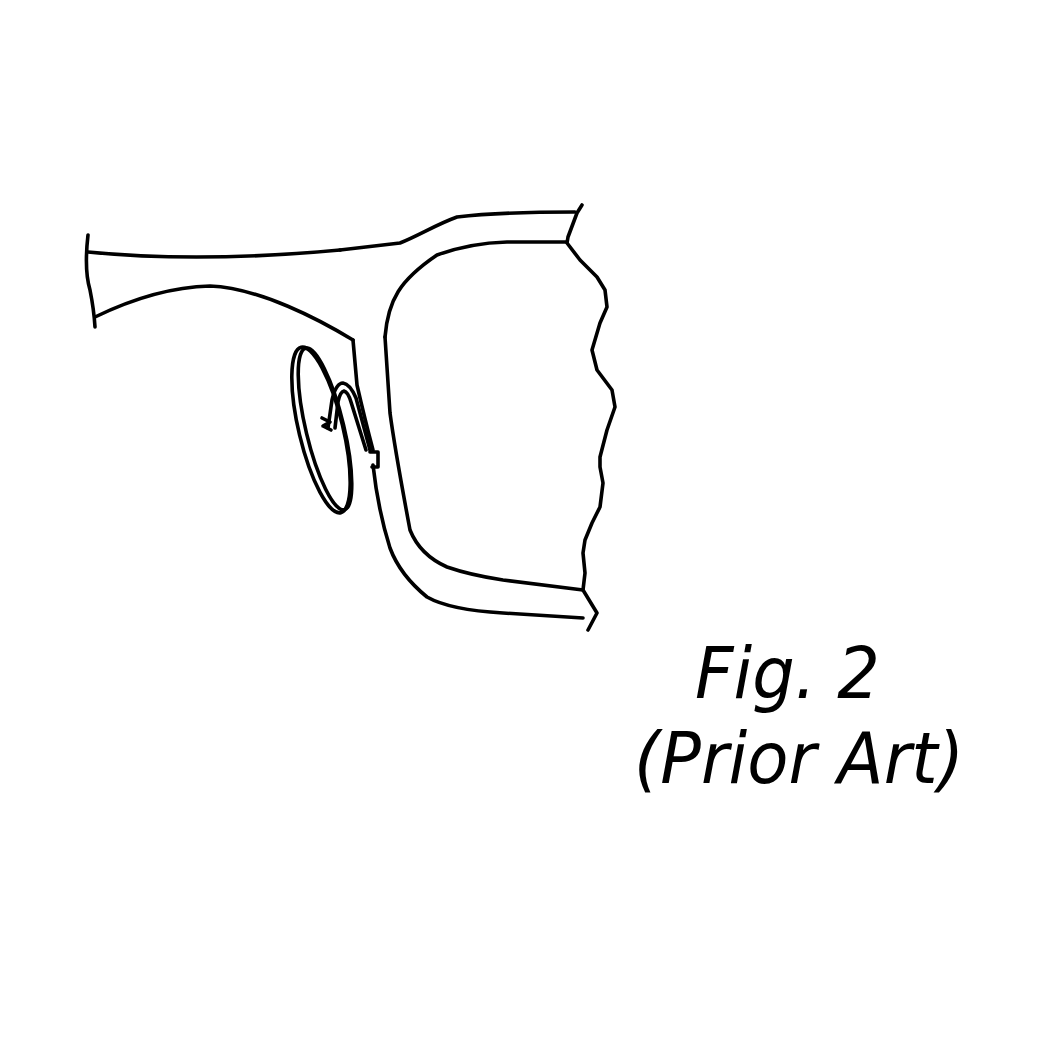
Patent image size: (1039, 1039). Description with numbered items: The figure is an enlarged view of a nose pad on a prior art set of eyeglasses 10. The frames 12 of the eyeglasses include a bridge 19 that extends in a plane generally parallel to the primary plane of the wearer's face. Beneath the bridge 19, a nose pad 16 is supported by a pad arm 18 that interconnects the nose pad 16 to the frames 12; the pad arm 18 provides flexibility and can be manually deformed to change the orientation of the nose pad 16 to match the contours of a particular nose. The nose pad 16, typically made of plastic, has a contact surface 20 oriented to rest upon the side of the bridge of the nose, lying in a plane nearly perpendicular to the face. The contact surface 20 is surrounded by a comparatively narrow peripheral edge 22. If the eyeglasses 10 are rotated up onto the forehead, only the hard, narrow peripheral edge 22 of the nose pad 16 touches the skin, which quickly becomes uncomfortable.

The set of eyeglasses 10 is at (508, 168).
The frames 12 is at (463, 237).
The bridge 19 is at (262, 285).
The nose pad 16 is at (333, 510).
The pad arm 18 is at (367, 420).
The contact surface 20 is at (290, 418).
The peripheral edge 22 is at (285, 380).